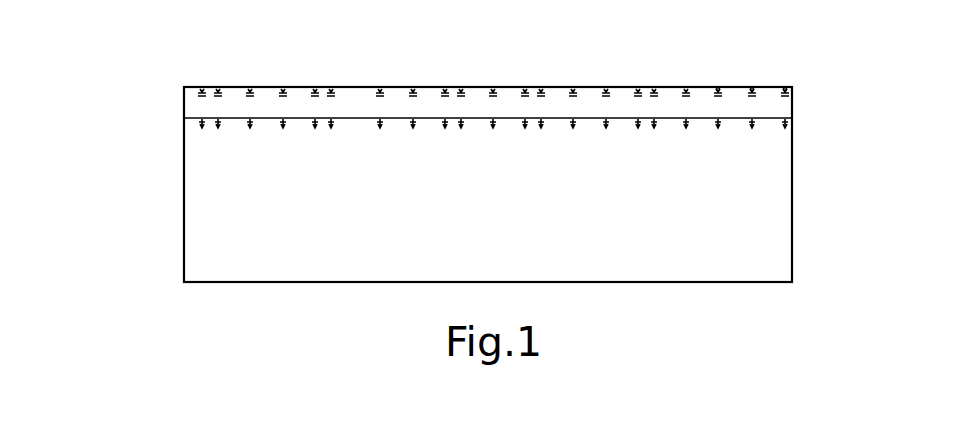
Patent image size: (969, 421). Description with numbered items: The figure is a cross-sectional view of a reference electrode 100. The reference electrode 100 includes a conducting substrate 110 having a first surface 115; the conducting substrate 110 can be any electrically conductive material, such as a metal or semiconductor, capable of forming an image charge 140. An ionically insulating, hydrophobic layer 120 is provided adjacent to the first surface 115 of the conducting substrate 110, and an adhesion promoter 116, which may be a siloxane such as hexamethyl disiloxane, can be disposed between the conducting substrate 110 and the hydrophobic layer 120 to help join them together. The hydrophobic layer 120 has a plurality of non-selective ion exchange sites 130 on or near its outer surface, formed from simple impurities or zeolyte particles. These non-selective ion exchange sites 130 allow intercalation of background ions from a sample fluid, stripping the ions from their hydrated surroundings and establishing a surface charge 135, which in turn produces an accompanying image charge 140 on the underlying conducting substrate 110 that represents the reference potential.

The reference electrode 100 is at (172, 203).
The conducting substrate 110 is at (536, 251).
The first surface 115 is at (428, 120).
The adhesion promoter 116 is at (352, 120).
The ionically insulating, hydrophobic layer 120 is at (620, 107).
The non-selective ion exchange sites 130 is at (718, 88).
The surface charge 135 is at (718, 92).
The image charge 140 is at (785, 122).